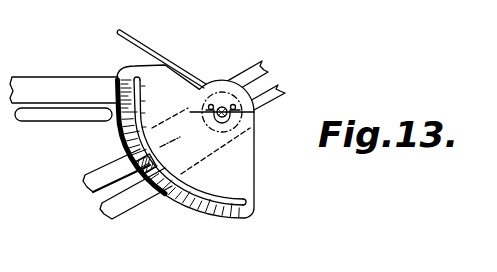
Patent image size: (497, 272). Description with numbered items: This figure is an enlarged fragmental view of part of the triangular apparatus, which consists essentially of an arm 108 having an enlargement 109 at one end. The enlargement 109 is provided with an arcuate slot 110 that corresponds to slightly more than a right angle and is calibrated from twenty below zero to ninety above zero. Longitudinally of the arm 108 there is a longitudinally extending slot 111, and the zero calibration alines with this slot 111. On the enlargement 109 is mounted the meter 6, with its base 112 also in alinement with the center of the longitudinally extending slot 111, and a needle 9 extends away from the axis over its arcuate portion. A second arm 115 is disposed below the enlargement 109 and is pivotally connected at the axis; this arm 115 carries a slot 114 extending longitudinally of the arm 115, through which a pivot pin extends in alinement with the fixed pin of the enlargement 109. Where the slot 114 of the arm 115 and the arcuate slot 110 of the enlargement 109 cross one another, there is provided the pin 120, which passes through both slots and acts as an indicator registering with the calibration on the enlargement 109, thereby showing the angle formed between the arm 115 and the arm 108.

The meter 6 is at (221, 82).
The needle 9 is at (143, 38).
The arm 108 is at (67, 69).
The enlargement 109 is at (201, 139).
The arcuate slot 110 is at (237, 208).
The longitudinally extending slot 111 is at (57, 110).
The base 112 is at (250, 118).
The slot 114 is at (90, 196).
The arm 115 is at (127, 200).
The pin 120 is at (137, 158).